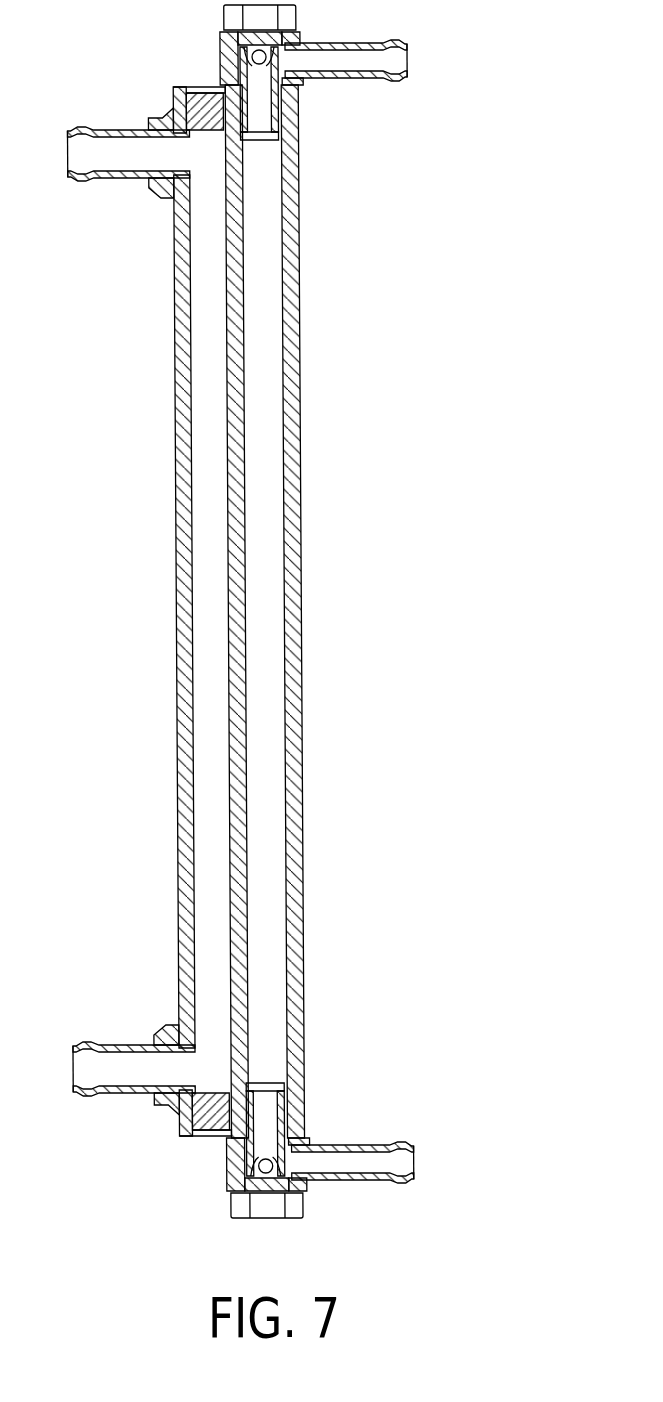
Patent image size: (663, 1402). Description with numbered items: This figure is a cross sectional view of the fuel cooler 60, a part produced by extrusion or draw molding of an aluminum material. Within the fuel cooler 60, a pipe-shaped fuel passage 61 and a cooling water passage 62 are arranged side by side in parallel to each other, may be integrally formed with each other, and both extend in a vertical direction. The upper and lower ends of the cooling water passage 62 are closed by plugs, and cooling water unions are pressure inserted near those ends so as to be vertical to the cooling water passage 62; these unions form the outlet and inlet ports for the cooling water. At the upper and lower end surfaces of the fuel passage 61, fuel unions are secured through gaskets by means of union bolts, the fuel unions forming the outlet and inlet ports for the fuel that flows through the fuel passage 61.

The fuel cooler 60 is at (523, 106).
The fuel passage 61 is at (273, 579).
The cooling water passage 62 is at (203, 580).